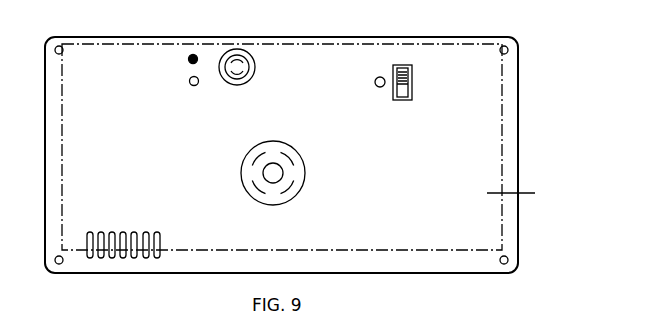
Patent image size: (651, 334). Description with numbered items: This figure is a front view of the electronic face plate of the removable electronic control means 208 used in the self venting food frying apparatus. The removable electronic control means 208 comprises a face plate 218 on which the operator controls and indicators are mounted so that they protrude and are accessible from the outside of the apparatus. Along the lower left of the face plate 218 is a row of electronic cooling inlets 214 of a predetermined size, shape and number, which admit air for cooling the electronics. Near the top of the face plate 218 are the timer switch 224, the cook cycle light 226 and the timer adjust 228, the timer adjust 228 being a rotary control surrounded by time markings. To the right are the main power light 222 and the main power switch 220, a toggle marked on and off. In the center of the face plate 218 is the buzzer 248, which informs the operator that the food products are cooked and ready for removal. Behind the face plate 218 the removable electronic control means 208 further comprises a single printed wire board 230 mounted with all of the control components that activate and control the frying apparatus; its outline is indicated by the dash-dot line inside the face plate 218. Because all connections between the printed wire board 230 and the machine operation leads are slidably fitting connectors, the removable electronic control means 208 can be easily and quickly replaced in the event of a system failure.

The removable electronic control means 208 is at (448, 275).
The electronic cooling inlets 214 is at (161, 245).
The face plate 218 is at (527, 194).
The main power switch 220 is at (413, 87).
The main power light 222 is at (375, 86).
The timer switch 224 is at (192, 54).
The cook cycle light 226 is at (190, 86).
The timer adjust 228 is at (256, 70).
The printed wire board 230 is at (117, 44).
The buzzer 248 is at (306, 173).